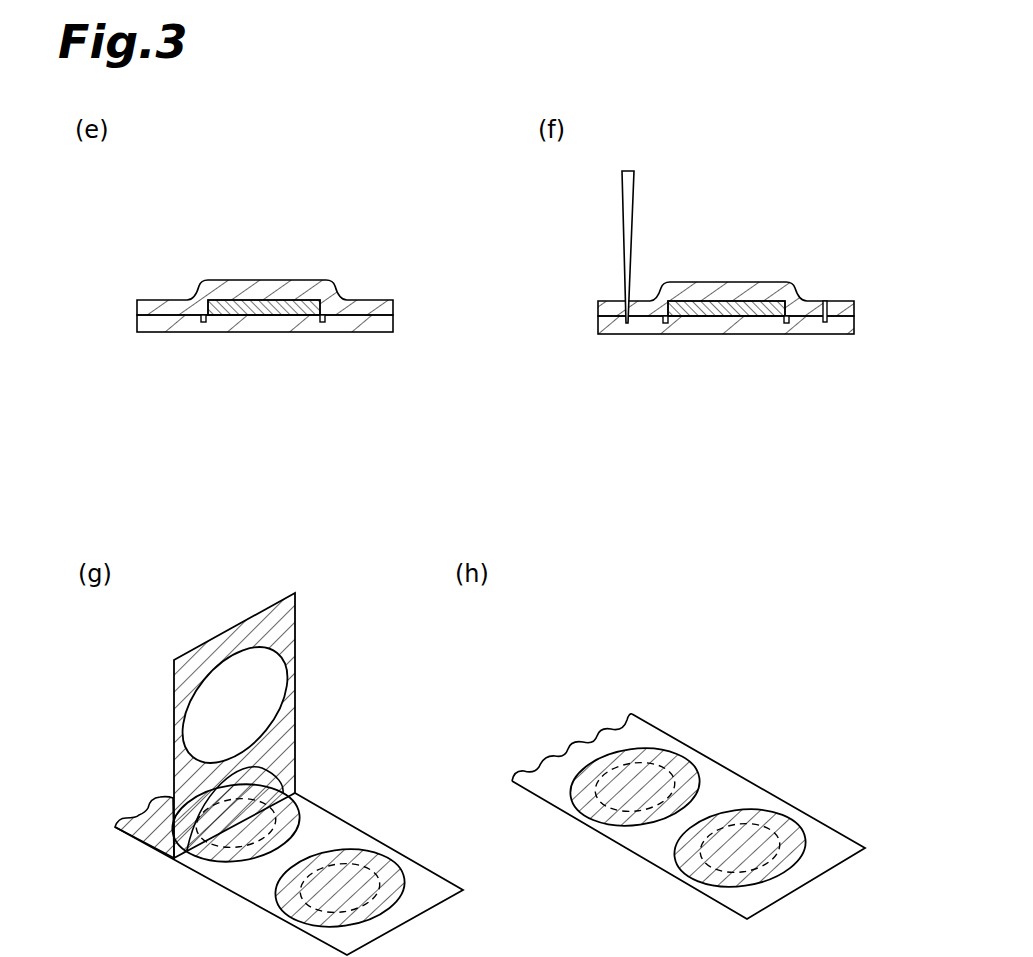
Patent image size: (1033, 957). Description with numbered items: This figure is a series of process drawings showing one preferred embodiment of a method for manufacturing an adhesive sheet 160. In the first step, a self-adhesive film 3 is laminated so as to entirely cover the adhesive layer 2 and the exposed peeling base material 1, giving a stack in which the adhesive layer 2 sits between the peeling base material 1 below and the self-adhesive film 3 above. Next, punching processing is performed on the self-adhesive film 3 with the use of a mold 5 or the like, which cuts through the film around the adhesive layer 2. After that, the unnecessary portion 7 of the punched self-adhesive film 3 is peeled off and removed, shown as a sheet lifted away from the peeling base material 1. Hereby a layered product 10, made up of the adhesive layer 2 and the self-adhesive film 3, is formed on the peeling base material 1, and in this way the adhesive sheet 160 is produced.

The peeling base material 1 is at (290, 333).
The adhesive layer 2 is at (270, 300).
The self-adhesive film 3 is at (300, 284).
The mold 5 is at (630, 202).
The unnecessary portion 7 is at (843, 308).
The layered product 10 is at (708, 652).
The adhesive sheet 160 is at (820, 664).